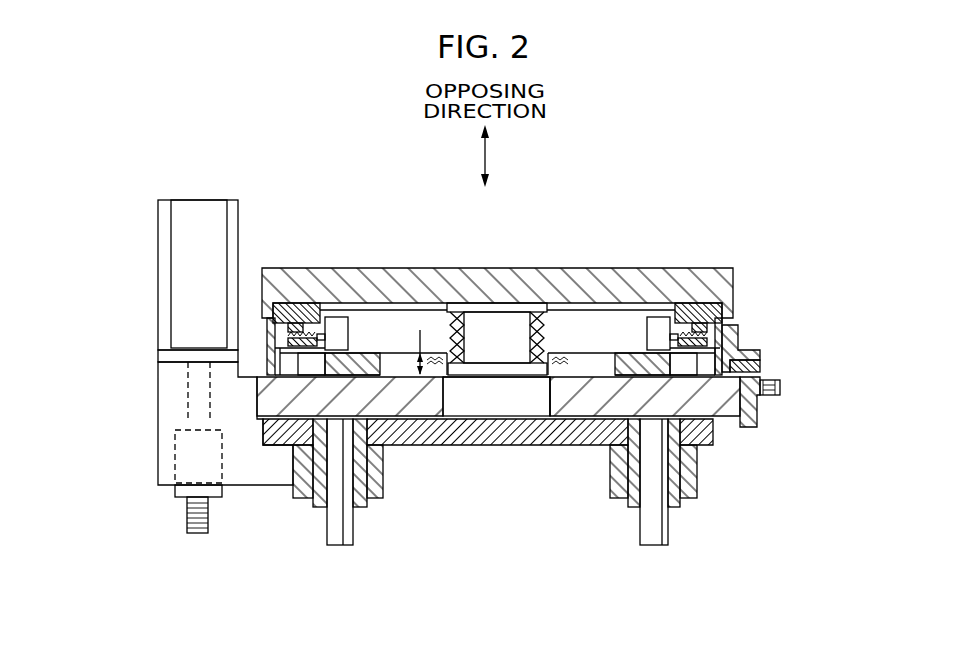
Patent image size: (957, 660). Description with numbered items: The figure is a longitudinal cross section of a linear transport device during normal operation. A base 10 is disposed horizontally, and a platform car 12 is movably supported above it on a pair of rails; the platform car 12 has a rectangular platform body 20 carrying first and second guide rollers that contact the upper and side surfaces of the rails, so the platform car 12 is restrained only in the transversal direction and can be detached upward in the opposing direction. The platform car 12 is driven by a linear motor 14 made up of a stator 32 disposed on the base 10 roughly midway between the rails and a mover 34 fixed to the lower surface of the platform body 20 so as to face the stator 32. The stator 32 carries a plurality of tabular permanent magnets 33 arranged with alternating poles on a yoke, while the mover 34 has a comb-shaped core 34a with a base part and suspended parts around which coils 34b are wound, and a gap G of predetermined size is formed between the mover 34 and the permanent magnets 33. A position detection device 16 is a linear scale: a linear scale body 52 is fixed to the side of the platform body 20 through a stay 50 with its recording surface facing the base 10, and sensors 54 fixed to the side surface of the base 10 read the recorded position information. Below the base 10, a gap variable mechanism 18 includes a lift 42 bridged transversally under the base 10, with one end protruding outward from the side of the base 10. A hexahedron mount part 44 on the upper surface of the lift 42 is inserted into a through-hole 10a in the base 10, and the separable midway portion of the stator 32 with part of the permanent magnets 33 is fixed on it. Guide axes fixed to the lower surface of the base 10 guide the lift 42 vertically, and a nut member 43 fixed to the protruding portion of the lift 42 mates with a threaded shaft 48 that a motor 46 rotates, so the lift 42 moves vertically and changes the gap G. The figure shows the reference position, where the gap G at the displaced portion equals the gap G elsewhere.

The base 10 is at (295, 405).
The through-hole 10a is at (547, 405).
The platform car 12 is at (611, 246).
The linear motor 14 is at (540, 555).
The position detection device 16 is at (827, 355).
The gap variable mechanism 18 is at (150, 428).
The platform body 20 is at (573, 278).
The stator 32 is at (472, 386).
The permanent magnets 33 is at (497, 376).
The mover 34 is at (517, 356).
The core 34a is at (497, 323).
The coils 34b is at (454, 330).
The lift 42 is at (157, 452).
The nut member 43 is at (180, 472).
The mount part 44 is at (452, 405).
The motor 46 is at (157, 282).
The threaded shaft 48 is at (187, 517).
The stay 50 is at (737, 336).
The linear scale body 52 is at (761, 365).
The sensors 54 is at (757, 418).
The gap G is at (411, 351).